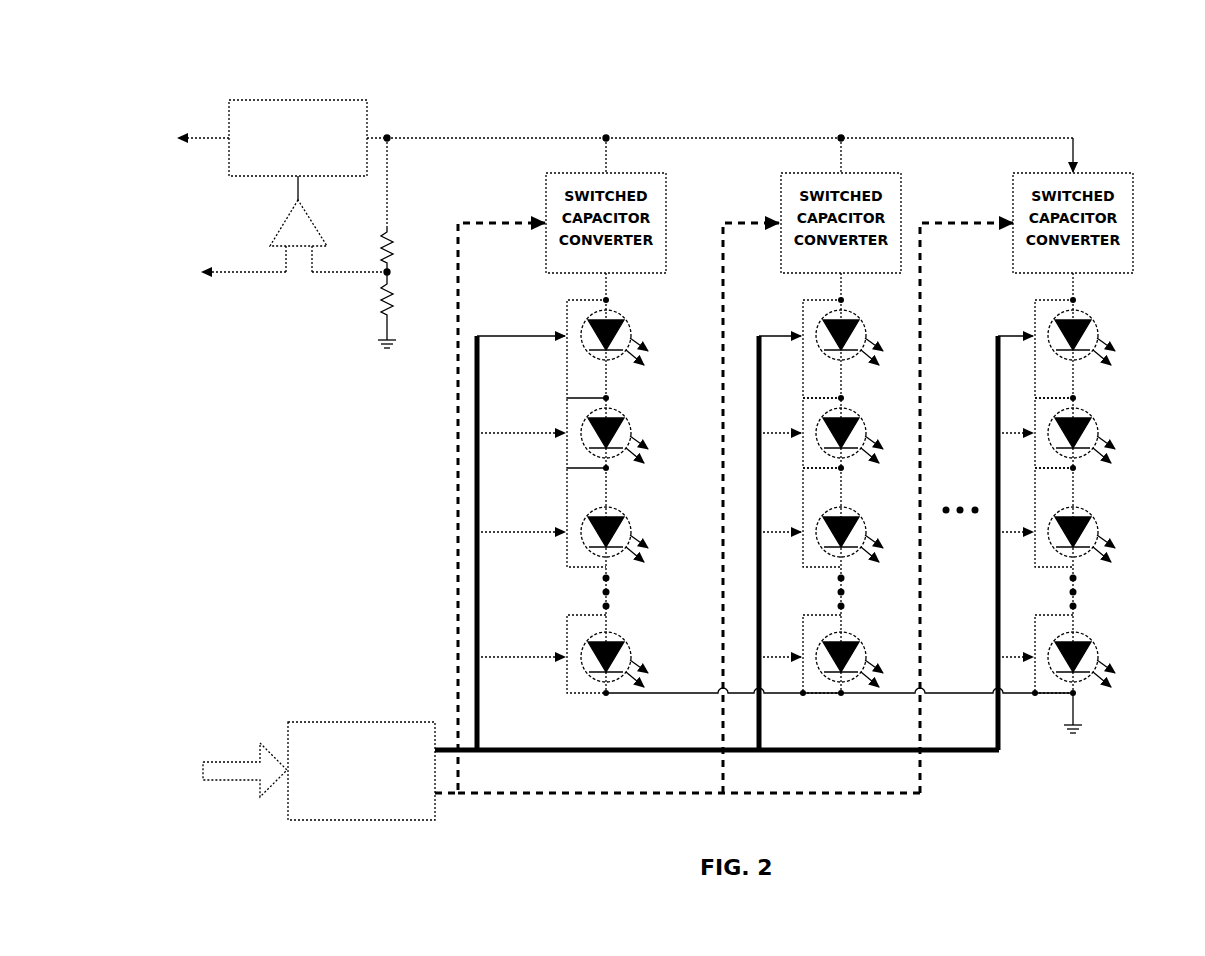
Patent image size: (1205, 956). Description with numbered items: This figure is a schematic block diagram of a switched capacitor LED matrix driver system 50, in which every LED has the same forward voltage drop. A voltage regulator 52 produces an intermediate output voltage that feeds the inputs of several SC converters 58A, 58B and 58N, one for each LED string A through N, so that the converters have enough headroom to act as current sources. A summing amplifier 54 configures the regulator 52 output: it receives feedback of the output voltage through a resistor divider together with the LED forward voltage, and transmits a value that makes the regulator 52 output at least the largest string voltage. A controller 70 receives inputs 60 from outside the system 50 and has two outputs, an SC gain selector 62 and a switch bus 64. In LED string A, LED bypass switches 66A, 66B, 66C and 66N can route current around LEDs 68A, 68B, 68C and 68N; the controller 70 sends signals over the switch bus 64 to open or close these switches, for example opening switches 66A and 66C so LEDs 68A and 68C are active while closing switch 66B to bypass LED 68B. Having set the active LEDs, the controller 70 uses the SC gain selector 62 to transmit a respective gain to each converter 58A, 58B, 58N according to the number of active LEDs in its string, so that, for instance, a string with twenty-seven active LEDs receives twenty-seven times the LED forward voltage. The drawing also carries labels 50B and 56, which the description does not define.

The LED driver system 50 is at (212, 502).
The LED driver system (alternate embodiment) 50B is at (976, 40).
The voltage regulator 52 is at (308, 138).
The summing amplifier 54 is at (284, 210).
The LED voltage output 56 is at (176, 290).
The SC converter 58A is at (606, 236).
The SC converter 58B is at (841, 236).
The SC converter 58N is at (1073, 236).
The inputs 60 is at (228, 757).
The SC gain selector 62 is at (724, 531).
The switch bus 64 is at (963, 757).
The LED bypass switch 66A is at (563, 326).
The LED bypass switch 66B is at (563, 422).
The LED bypass switch 66C is at (563, 521).
The LED bypass switch 66N is at (563, 648).
The LED 68A is at (630, 317).
The LED 68B is at (632, 418).
The LED 68C is at (632, 517).
The LED 68N is at (632, 643).
The controller 70 is at (361, 771).